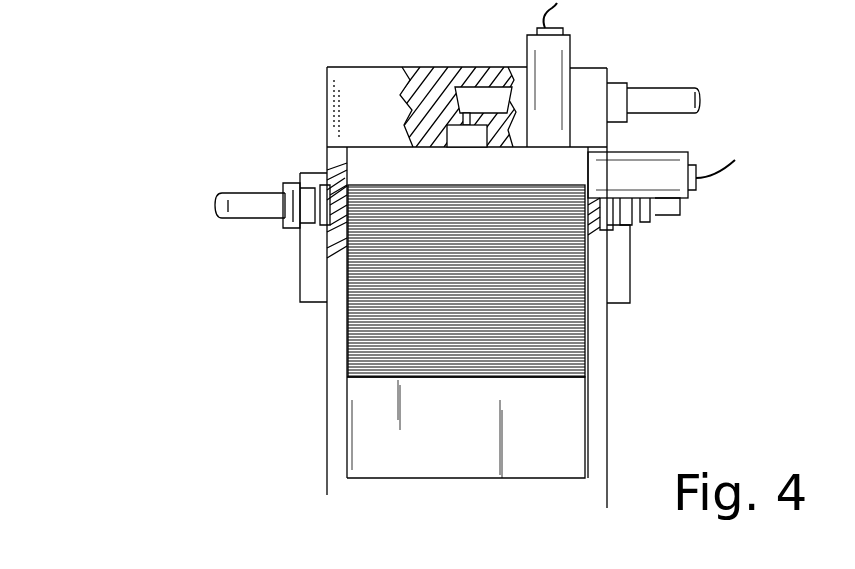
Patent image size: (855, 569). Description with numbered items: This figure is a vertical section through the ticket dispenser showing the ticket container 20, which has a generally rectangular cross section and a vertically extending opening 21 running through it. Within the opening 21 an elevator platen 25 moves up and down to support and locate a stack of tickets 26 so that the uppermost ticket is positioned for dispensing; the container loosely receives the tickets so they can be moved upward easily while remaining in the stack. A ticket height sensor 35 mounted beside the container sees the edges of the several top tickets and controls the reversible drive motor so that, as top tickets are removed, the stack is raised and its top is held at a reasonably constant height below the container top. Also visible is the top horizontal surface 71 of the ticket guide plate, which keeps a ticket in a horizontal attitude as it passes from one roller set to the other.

The ticket container 20 is at (622, 316).
The vertically extending opening 21 is at (578, 262).
The platen 25 is at (568, 443).
The stack of tickets 26 is at (568, 355).
The ticket height sensor 35 is at (655, 165).
The top horizontal surface 71 is at (570, 53).